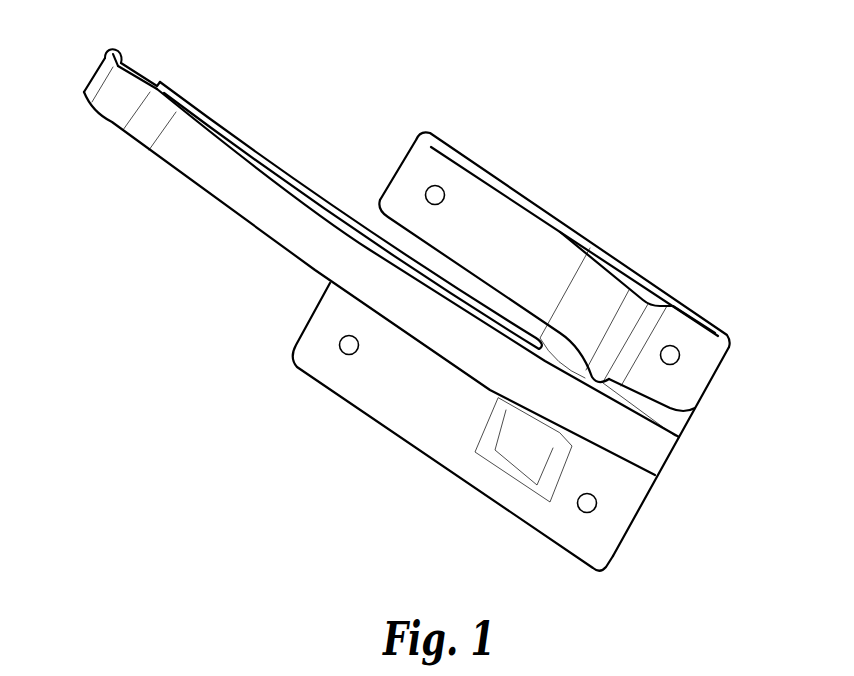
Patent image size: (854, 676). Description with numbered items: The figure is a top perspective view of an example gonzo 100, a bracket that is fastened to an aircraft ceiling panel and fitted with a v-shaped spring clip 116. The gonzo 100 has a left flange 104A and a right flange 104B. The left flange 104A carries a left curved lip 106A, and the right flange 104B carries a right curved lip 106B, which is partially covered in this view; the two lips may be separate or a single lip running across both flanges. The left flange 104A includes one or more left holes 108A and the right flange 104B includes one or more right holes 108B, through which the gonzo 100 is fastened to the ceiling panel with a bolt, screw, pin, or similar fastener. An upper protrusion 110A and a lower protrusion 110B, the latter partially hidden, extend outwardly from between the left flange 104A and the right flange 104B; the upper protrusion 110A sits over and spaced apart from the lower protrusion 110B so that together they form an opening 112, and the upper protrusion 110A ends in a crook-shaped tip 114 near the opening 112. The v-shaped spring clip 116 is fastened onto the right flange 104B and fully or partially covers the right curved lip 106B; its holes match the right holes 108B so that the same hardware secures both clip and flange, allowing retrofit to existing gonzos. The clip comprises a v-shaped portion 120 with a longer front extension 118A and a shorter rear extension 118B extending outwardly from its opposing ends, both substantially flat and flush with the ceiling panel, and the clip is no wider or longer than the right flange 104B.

The gonzo 100 is at (424, 292).
The left flange 104A is at (315, 306).
The right flange 104B is at (386, 190).
The left curved lip 106A is at (500, 402).
The right curved lip 106B is at (569, 358).
The left holes 108A is at (353, 354).
The right holes 108B is at (439, 204).
The upper protrusion 110A is at (163, 163).
The lower protrusion 110B is at (200, 110).
The opening 112 is at (139, 64).
The crook-shaped tip 114 is at (101, 66).
The v-shaped spring clip 116 is at (541, 284).
The front extension 118A is at (589, 234).
The rear extension 118B is at (738, 332).
The v-shaped portion 120 is at (598, 240).